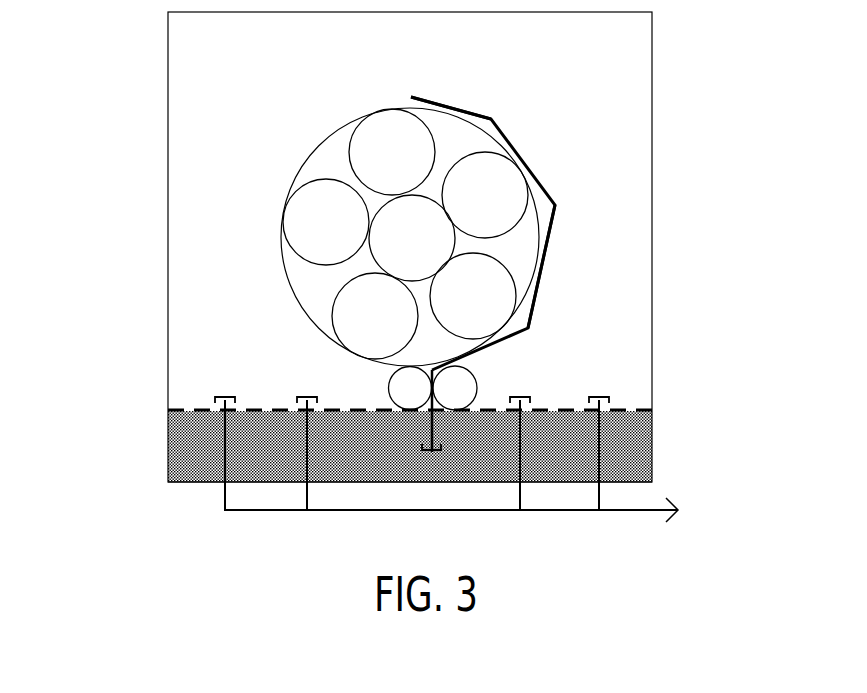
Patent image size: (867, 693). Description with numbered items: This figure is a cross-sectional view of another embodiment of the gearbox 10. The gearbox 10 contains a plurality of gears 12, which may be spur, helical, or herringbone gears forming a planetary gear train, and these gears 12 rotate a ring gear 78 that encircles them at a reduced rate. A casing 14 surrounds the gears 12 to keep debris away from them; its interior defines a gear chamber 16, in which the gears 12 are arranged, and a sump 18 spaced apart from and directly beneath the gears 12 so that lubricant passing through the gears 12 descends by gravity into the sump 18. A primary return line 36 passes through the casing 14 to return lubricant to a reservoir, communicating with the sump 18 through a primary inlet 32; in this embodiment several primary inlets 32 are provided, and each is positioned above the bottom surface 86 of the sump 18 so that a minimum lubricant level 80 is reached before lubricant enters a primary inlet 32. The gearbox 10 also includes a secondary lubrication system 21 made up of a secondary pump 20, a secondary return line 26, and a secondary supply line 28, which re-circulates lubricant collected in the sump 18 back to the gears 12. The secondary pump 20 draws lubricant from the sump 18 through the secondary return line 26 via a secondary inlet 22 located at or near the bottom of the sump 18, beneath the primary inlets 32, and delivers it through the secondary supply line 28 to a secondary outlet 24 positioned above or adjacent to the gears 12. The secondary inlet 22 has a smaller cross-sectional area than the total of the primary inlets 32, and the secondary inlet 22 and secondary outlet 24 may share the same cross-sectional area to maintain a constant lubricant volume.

The gearbox 10 is at (143, 130).
The plurality of gears 12 is at (381, 165).
The casing 14 is at (168, 185).
The gear chamber 16 is at (251, 125).
The sump 18 is at (410, 446).
The secondary pump 20 is at (405, 388).
The secondary lubrication system 21 is at (528, 150).
The secondary inlet 22 is at (434, 458).
The secondary outlet 24 is at (408, 95).
The secondary return line 26 is at (435, 422).
The secondary supply line 28 is at (555, 205).
The primary inlet 32 is at (217, 392).
The primary return line 36 is at (225, 468).
The ring gear 78 is at (283, 241).
The minimum lubricant level 80 is at (630, 409).
The bottom surface 86 is at (188, 482).